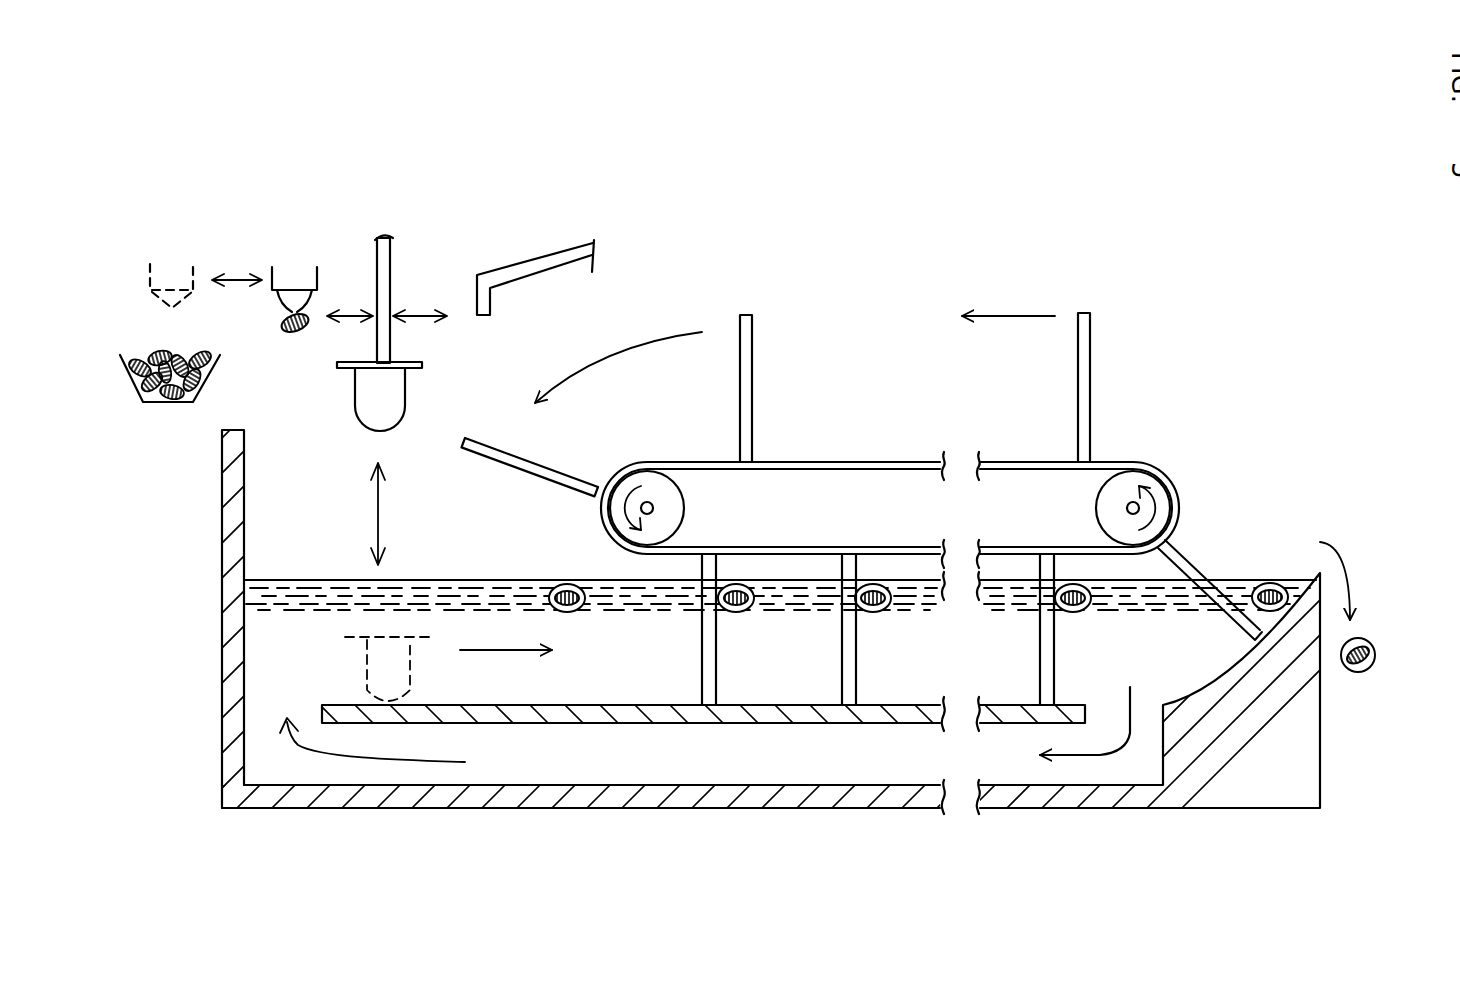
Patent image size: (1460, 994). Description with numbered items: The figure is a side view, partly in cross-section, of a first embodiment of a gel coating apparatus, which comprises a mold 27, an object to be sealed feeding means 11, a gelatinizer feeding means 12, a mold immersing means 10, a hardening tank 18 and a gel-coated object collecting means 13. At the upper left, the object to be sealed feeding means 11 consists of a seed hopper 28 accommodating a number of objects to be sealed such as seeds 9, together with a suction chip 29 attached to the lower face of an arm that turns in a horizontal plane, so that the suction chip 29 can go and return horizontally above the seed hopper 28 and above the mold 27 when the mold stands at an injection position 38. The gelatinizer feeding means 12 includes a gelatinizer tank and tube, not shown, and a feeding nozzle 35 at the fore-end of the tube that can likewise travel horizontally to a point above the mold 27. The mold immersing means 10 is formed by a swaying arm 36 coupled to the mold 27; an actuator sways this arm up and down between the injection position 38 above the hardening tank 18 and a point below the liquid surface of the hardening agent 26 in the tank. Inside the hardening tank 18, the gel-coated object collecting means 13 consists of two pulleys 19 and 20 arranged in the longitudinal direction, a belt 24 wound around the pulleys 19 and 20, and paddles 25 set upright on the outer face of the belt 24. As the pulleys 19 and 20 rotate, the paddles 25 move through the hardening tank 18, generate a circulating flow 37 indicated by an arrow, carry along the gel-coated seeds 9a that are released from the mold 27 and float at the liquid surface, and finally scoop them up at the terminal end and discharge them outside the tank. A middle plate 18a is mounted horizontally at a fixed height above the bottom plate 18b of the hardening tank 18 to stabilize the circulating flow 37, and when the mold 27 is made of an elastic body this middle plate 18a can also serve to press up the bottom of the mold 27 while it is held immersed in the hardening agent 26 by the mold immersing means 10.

The seeds 9 is at (210, 345).
The gel-coated seeds 9a is at (1357, 674).
The mold immersing means 10 is at (422, 255).
The object to be sealed feeding means 11 is at (305, 190).
The gelatinizer feeding means 12 is at (600, 197).
The gel-coated object collecting means 13 is at (1170, 314).
The hardening tank 18 is at (228, 650).
The middle plate 18a is at (590, 720).
The bottom plate 18b is at (690, 800).
The pulley 19 is at (665, 478).
The pulley 20 is at (1140, 490).
The belt 24 is at (875, 465).
The paddles 25 is at (753, 342).
The hardening agent 26 is at (268, 683).
The mold 27 is at (403, 400).
The seed hopper 28 is at (182, 403).
The suction chip 29 is at (193, 278).
The feeding nozzle 35 is at (546, 262).
The swaying arm 36 is at (390, 293).
The circulating flow 37 is at (1100, 757).
The injection position 38 is at (343, 402).